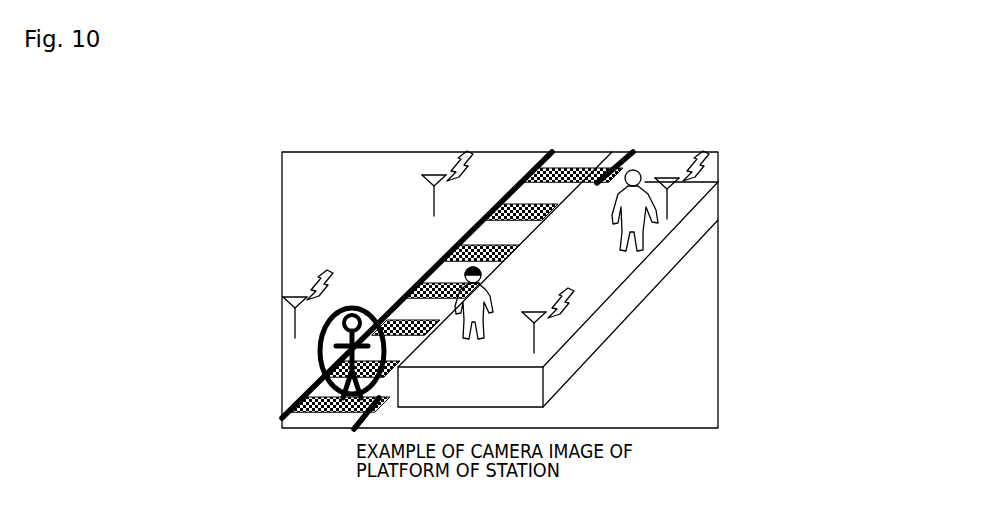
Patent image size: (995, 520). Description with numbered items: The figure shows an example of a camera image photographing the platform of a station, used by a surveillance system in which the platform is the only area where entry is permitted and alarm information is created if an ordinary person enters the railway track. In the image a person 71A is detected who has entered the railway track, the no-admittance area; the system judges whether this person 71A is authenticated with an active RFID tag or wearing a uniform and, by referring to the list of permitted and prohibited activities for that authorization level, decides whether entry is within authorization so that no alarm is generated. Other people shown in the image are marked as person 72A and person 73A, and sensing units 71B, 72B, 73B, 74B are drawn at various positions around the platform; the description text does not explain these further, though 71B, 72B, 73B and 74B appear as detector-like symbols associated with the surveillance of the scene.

The person 71A is at (352, 312).
The sensor antenna / camera unit 71B is at (295, 338).
The passenger on platform 72A is at (483, 343).
The sensor antenna / camera unit 72B is at (437, 189).
The passenger on platform 73A is at (632, 168).
The sensor antenna / camera unit 73B is at (540, 328).
The sensor antenna / camera unit 74B is at (672, 208).